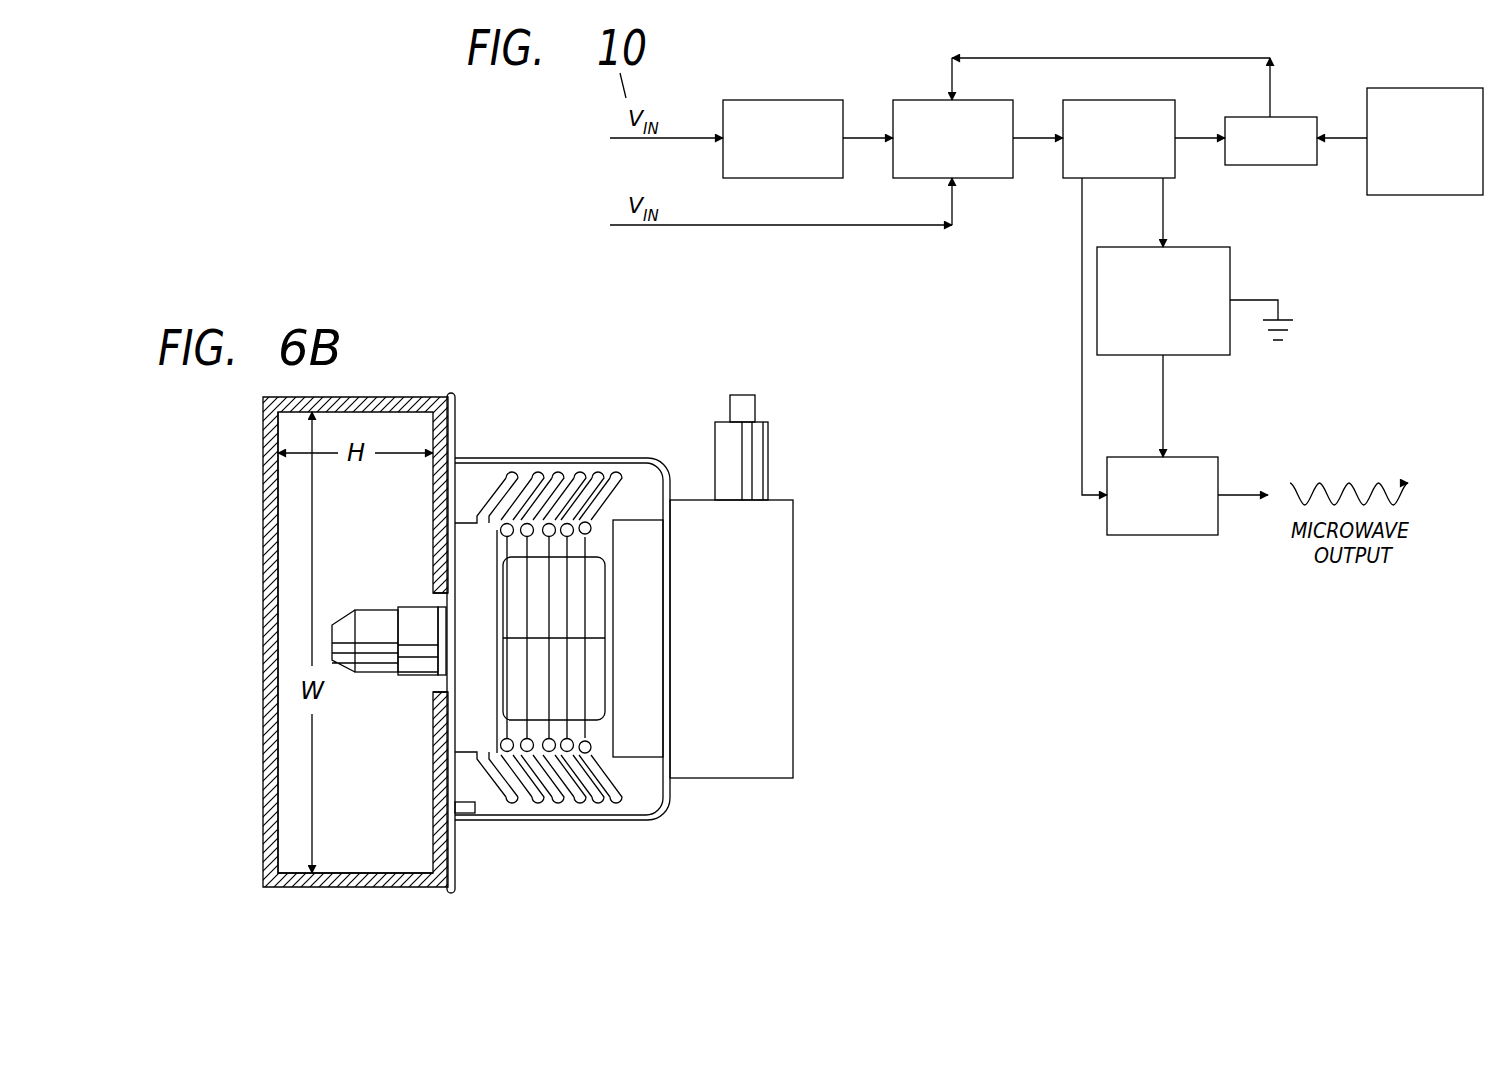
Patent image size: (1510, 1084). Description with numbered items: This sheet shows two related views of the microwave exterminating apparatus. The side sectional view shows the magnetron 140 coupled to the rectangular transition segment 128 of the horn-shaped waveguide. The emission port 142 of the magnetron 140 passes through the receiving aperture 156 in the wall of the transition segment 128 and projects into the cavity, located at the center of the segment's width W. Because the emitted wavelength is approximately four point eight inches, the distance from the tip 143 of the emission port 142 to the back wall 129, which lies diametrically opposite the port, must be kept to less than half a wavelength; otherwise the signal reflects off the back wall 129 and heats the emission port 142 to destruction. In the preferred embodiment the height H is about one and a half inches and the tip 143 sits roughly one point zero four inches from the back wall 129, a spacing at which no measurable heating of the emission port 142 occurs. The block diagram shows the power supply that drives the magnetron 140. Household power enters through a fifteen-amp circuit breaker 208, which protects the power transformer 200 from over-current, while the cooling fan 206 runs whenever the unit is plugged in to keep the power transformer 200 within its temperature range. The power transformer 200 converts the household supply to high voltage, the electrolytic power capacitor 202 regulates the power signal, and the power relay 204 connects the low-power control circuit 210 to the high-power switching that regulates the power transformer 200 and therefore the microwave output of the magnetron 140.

In FIG. 6B, the transition segment 128 is at (246, 545).
In FIG. 6B, the back wall 129 is at (278, 838).
In FIG. 10, the magnetron 140 is at (1218, 470).
In FIG. 6B, the magnetron 140 is at (550, 443).
In FIG. 6B, the emission port 142 is at (357, 675).
In FIG. 6B, the tip 143 is at (343, 618).
In FIG. 6B, the receiving aperture 156 is at (436, 600).
In FIG. 10, the power transformer 200 is at (1118, 100).
In FIG. 10, the power capacitor 202 is at (1230, 270).
In FIG. 10, the power relay 204 is at (1285, 117).
In FIG. 10, the cooling fan 206 is at (783, 100).
In FIG. 10, the circuit breaker 208 is at (930, 100).
In FIG. 10, the control circuit 210 is at (1425, 88).